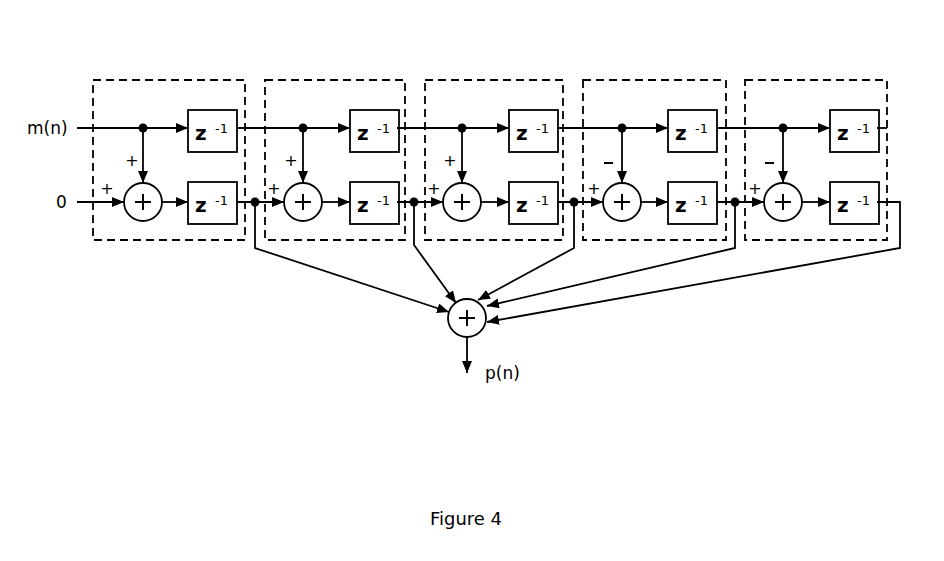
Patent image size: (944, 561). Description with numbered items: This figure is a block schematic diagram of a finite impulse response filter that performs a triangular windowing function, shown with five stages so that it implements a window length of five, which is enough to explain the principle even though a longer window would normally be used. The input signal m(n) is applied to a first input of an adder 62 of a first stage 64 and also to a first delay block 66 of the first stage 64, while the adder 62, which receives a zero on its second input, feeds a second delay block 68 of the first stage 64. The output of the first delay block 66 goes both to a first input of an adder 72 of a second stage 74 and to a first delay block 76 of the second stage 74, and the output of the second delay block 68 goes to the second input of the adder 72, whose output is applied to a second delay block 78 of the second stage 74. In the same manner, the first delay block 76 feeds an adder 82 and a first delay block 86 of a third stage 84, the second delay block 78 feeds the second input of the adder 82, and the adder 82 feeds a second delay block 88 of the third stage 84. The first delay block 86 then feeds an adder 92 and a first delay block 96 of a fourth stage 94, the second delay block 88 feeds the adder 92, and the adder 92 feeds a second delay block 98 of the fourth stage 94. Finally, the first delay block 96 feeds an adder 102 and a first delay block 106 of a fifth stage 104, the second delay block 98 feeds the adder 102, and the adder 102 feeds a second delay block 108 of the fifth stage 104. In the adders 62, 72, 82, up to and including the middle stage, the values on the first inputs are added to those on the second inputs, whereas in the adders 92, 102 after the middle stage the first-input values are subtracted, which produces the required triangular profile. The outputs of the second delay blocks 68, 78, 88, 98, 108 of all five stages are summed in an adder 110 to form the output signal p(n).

The adder 62 is at (143, 222).
The first stage 64 is at (131, 79).
The first delay block 66 is at (217, 110).
The second delay block 68 is at (214, 223).
The adder 72 is at (303, 222).
The second stage 74 is at (300, 79).
The first delay block 76 is at (377, 110).
The second delay block 78 is at (374, 223).
The adder 82 is at (462, 222).
The third stage 84 is at (464, 79).
The first delay block 86 is at (536, 110).
The second delay block 88 is at (534, 223).
The adder 92 is at (622, 222).
The fourth stage 94 is at (620, 79).
The first delay block 96 is at (697, 110).
The second delay block 98 is at (693, 223).
The adder 102 is at (777, 221).
The fifth stage 104 is at (785, 79).
The first delay block 106 is at (857, 110).
The second delay block 108 is at (857, 223).
The adder 110 is at (456, 336).